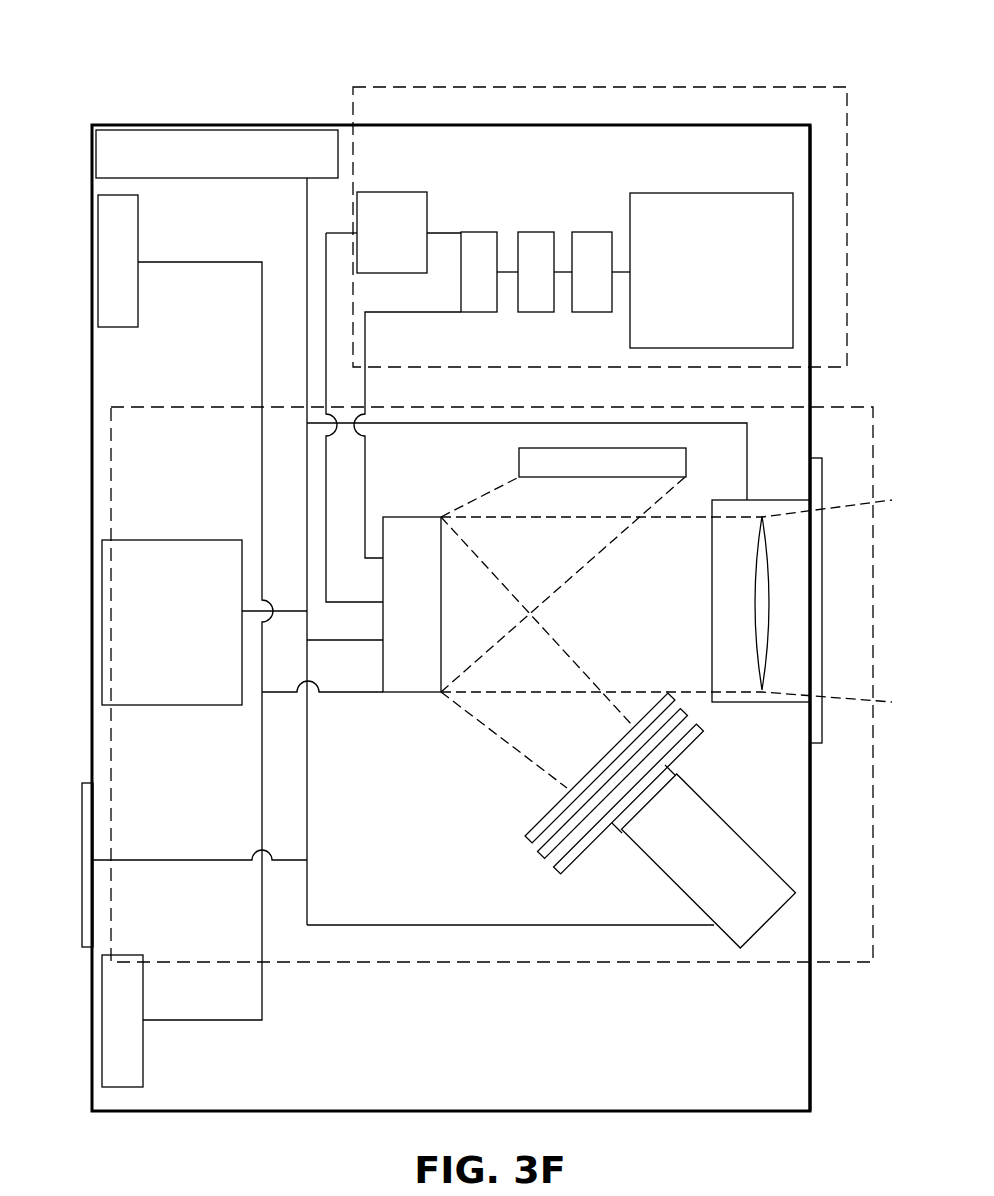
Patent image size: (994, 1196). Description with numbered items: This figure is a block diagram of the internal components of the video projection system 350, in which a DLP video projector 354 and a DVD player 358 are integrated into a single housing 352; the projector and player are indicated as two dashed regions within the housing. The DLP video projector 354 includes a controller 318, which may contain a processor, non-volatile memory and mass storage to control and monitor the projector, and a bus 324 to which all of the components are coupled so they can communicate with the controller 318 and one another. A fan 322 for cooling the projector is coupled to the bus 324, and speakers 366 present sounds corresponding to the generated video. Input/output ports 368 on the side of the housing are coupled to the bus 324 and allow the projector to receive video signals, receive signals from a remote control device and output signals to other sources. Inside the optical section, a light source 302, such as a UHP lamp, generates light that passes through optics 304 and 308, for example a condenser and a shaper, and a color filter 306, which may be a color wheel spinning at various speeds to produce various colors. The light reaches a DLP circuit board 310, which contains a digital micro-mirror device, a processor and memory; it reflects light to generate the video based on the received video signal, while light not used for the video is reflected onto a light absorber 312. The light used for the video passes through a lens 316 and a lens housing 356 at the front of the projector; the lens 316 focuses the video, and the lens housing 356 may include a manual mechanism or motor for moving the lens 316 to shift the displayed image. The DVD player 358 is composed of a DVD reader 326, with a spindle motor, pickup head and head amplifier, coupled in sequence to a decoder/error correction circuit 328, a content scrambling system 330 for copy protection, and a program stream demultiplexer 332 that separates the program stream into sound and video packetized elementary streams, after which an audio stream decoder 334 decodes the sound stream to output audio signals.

The light source 302 is at (695, 878).
The optics 304 is at (553, 878).
The color filter 306 is at (540, 858).
The optics 308 is at (523, 838).
The DLP circuit board 310 is at (395, 616).
The light absorber 312 is at (519, 466).
The lens 316 is at (748, 630).
The controller 318 is at (155, 627).
The fan 322 is at (207, 125).
The bus 324 is at (315, 790).
The DVD reader 326 is at (694, 282).
The decoder/error correction circuit 328 is at (590, 232).
The content scrambling system 330 is at (532, 232).
The program stream demultiplexer 332 is at (478, 232).
The audio stream decoder 334 is at (375, 245).
The video projection system 350 is at (433, 32).
The housing 352 is at (812, 1038).
The DLP video projector 354 is at (873, 435).
The lens housing 356 is at (822, 585).
The DVD player 358 is at (848, 92).
The speakers 366 is at (80, 272).
The input/output ports 368 is at (80, 797).